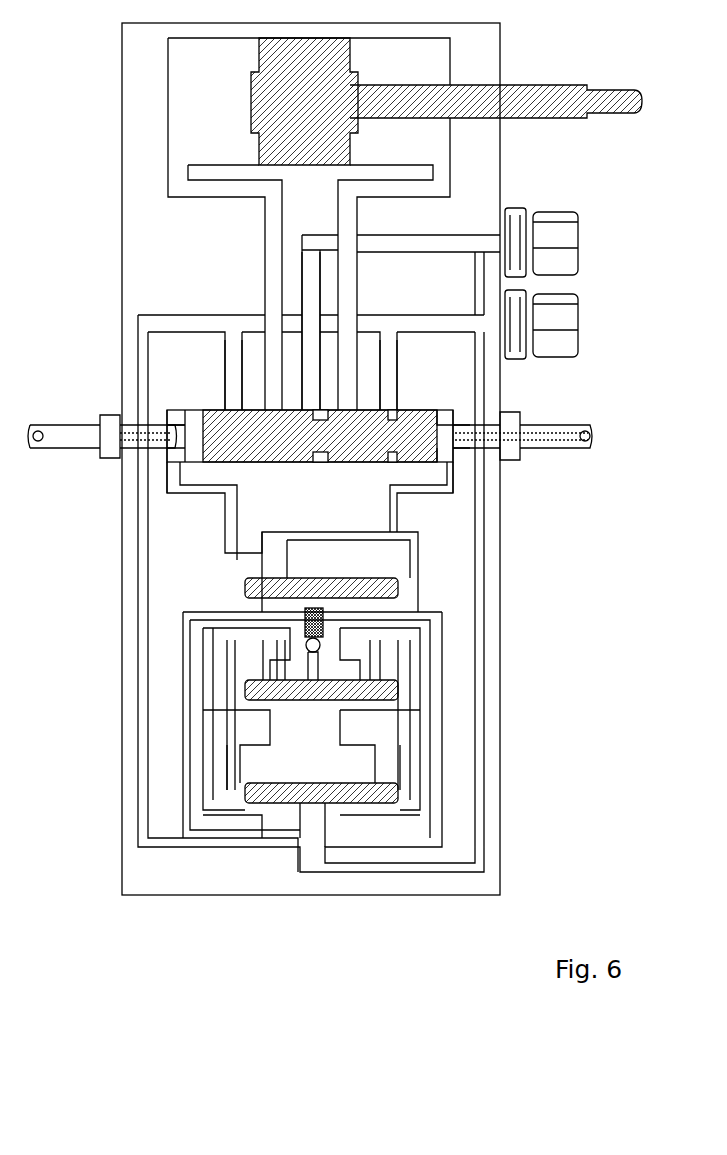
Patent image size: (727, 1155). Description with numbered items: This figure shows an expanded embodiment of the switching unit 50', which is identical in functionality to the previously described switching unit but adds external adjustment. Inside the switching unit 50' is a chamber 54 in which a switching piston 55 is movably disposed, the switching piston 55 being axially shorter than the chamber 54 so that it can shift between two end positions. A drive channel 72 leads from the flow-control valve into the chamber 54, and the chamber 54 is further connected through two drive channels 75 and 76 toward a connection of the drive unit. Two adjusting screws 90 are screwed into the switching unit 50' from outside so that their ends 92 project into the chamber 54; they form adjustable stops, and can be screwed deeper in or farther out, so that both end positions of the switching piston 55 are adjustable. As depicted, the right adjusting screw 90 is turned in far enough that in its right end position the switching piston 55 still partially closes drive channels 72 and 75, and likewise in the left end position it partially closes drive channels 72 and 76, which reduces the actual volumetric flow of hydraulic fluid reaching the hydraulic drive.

The switching unit 50' is at (336, 459).
The chamber 54 is at (178, 453).
The switching piston 55 is at (310, 436).
The drive channel 72 is at (315, 343).
The drive channel 75 is at (393, 370).
The drive channel 76 is at (232, 386).
The adjusting screw 90 is at (65, 443).
The end 92 is at (173, 437).